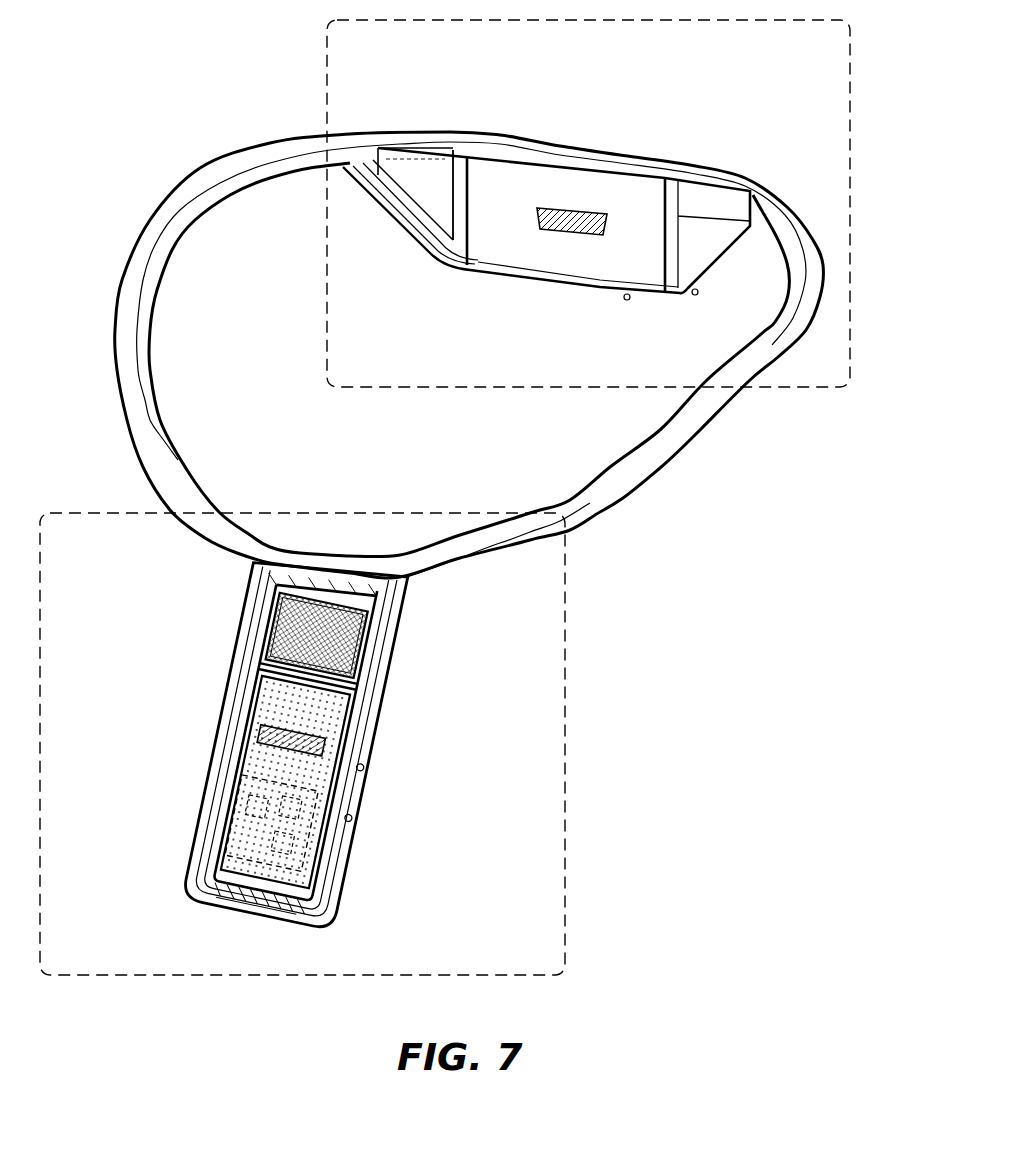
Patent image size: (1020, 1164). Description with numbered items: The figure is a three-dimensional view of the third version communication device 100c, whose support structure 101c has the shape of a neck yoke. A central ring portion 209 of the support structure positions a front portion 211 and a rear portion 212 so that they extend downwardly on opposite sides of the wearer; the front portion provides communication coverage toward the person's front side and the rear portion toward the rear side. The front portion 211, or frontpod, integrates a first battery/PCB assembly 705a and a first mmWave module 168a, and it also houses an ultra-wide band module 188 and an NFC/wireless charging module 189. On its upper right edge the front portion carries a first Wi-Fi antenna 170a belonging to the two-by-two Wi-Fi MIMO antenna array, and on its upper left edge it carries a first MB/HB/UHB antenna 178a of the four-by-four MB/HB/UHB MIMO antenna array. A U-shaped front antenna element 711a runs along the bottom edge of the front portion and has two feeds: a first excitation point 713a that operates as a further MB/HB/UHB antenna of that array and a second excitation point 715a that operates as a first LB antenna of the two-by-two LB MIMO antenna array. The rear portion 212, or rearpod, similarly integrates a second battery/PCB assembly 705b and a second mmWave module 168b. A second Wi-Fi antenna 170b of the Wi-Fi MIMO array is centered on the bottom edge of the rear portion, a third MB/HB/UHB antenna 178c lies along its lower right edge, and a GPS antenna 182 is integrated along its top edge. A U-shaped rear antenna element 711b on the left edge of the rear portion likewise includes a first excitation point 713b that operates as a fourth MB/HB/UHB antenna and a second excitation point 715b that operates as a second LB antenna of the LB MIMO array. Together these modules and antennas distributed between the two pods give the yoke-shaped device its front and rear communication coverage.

The third version communication device 100c is at (182, 133).
The support structure 101c is at (161, 198).
The central ring portion 209 is at (628, 496).
The front portion 211 is at (302, 744).
The rear portion 212 is at (588, 203).
The GPS antenna 182 is at (440, 140).
The second mmWave module 168b is at (560, 208).
The second battery/PCB assembly 705b is at (625, 170).
The U-shaped rear antenna element 711b is at (700, 178).
The third MB/HB/UHB antenna 178c is at (405, 228).
The second Wi-Fi antenna 170b is at (565, 300).
The second excitation point 715b is at (698, 294).
The first excitation point 713b is at (629, 300).
The first MB/HB/UHB antenna 178a is at (237, 638).
The NFC/wireless charging module 189 is at (317, 635).
The first Wi-Fi antenna 170a is at (392, 640).
The first battery/PCB assembly 705a is at (270, 706).
The first mmWave module 168a is at (330, 740).
The ultra-wide band module 188 is at (240, 792).
The first excitation point 713a is at (366, 766).
The second excitation point 715a is at (355, 819).
The U-shaped front antenna element 711a is at (192, 855).